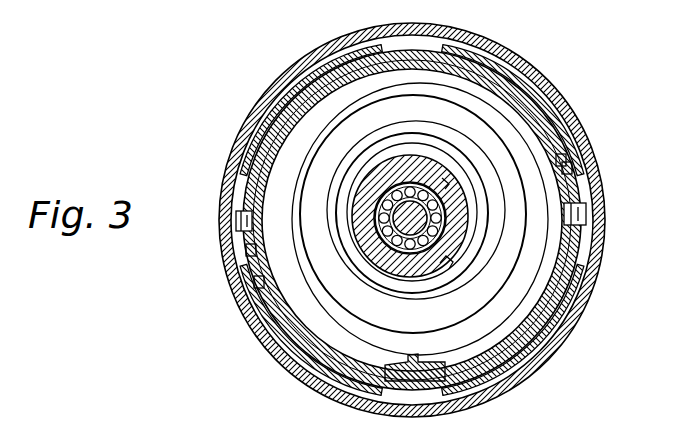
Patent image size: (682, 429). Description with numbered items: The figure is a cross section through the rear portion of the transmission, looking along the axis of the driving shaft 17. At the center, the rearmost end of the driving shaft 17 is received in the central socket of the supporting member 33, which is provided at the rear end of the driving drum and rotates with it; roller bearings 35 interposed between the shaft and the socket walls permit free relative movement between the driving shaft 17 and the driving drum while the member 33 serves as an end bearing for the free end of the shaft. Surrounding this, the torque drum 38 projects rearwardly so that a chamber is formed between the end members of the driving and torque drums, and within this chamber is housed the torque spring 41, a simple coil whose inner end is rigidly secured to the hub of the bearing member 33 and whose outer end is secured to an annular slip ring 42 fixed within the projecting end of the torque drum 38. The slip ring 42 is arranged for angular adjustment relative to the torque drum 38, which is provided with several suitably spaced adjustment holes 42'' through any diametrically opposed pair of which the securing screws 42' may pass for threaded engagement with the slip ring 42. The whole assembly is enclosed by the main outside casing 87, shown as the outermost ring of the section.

The main outside casing 87 is at (525, 60).
The slip ring 42 is at (430, 220).
The securing screws 42' is at (417, 222).
The adjustment holes 42'' is at (419, 220).
The torque drum 38 is at (562, 318).
The torque spring 41 is at (305, 268).
The driving shaft 17 is at (404, 218).
The supporting member 33 is at (448, 185).
The roller bearings 35 is at (432, 227).